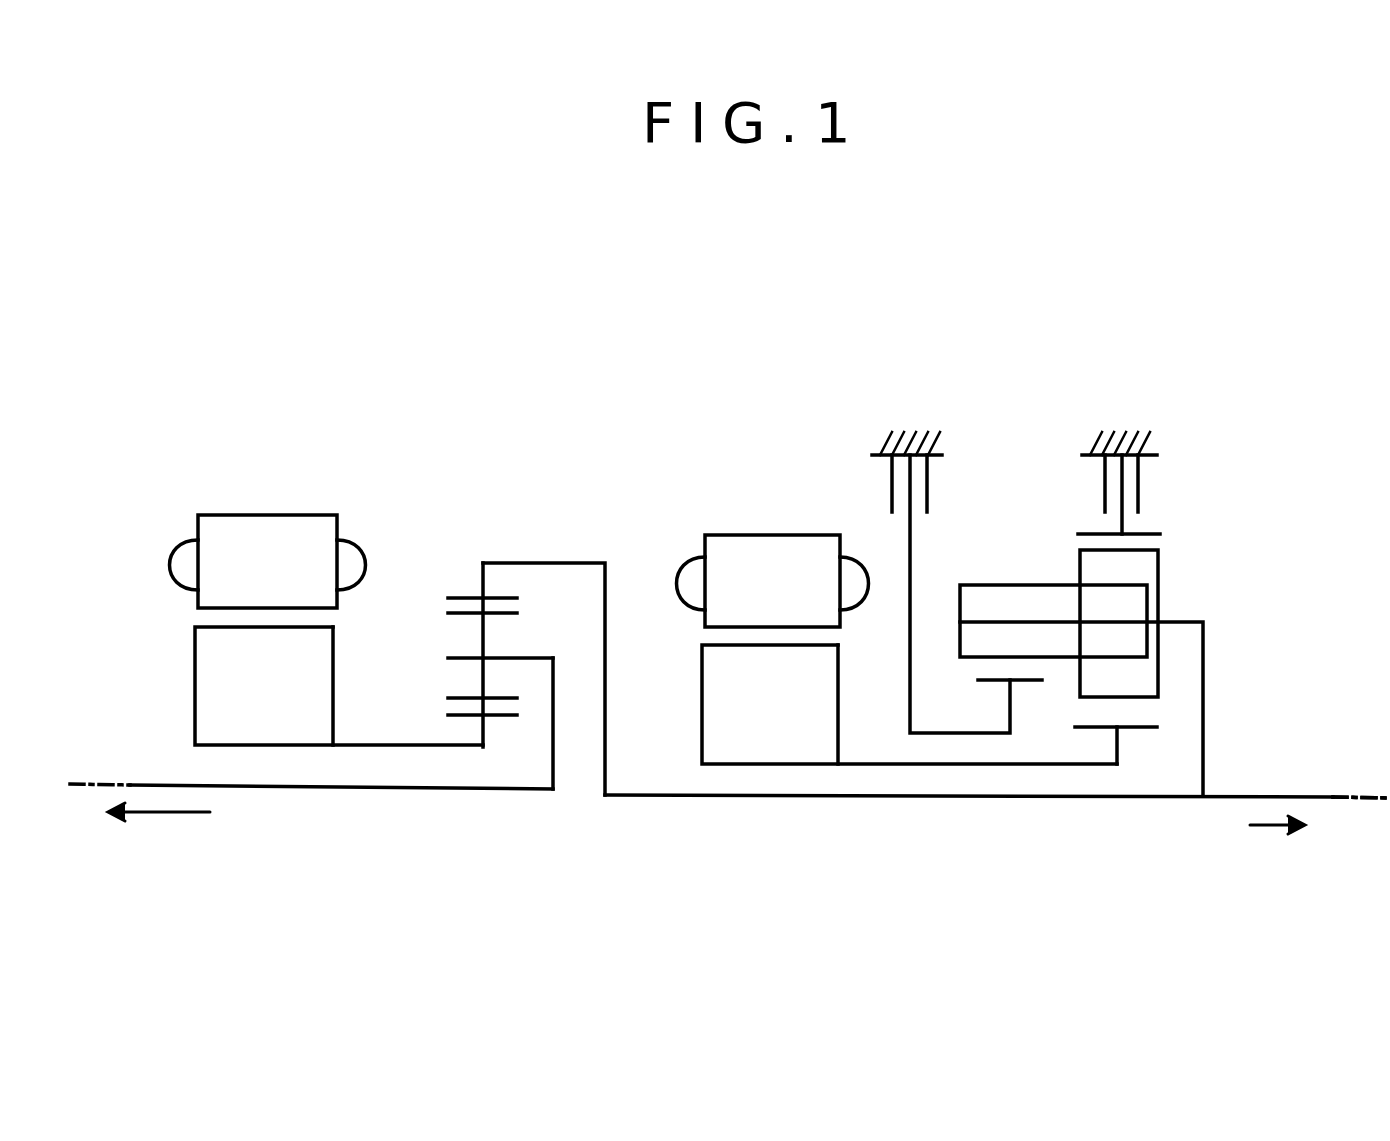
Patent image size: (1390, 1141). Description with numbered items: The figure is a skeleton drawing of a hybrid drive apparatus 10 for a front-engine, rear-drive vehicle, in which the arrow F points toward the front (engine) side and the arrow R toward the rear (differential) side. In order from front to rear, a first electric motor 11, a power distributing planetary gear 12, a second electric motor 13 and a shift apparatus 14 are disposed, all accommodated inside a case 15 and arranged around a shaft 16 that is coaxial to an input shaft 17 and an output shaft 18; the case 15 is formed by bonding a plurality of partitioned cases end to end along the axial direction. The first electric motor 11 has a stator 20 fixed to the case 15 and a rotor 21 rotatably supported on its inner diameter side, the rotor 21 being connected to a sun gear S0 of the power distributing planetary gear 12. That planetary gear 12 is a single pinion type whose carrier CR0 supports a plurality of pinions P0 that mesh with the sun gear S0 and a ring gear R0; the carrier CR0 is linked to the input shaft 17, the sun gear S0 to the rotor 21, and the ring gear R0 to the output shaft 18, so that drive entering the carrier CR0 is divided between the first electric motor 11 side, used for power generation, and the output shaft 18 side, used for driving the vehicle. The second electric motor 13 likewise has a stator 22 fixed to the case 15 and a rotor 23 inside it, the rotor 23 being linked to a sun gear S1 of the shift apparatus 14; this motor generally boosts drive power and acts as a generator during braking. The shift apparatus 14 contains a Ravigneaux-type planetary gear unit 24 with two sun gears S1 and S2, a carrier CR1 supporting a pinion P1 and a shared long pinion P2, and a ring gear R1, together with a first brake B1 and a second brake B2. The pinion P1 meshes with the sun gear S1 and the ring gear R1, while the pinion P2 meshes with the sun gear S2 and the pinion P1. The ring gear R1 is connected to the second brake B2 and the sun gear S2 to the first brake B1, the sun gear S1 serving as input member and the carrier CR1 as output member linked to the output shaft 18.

The hybrid drive apparatus 10 is at (681, 402).
The first electric motor 11 is at (293, 570).
The power distributing planetary gear 12 is at (494, 619).
The second electric motor 13 is at (866, 588).
The shift apparatus 14 is at (1114, 561).
The case 15 is at (876, 449).
The shaft 16 is at (1367, 801).
The input shaft 17 is at (522, 790).
The output shaft 18 is at (920, 798).
The stator 20 is at (208, 588).
The rotor 21 is at (201, 688).
The stator 22 is at (717, 613).
The rotor 23 is at (711, 715).
The planetary gear unit 24 is at (1028, 555).
The ring gear R0 is at (468, 597).
The pinions P0 is at (482, 634).
The sun gear S0 is at (470, 708).
The carrier CR0 is at (553, 691).
The first brake B1 is at (928, 495).
The second brake B2 is at (1103, 493).
The pinion P2 is at (1000, 584).
The sun gear S2 is at (1001, 683).
The ring gear R1 is at (1152, 532).
The pinion P1 is at (1160, 572).
The sun gear S1 is at (1125, 729).
The carrier CR1 is at (1209, 660).